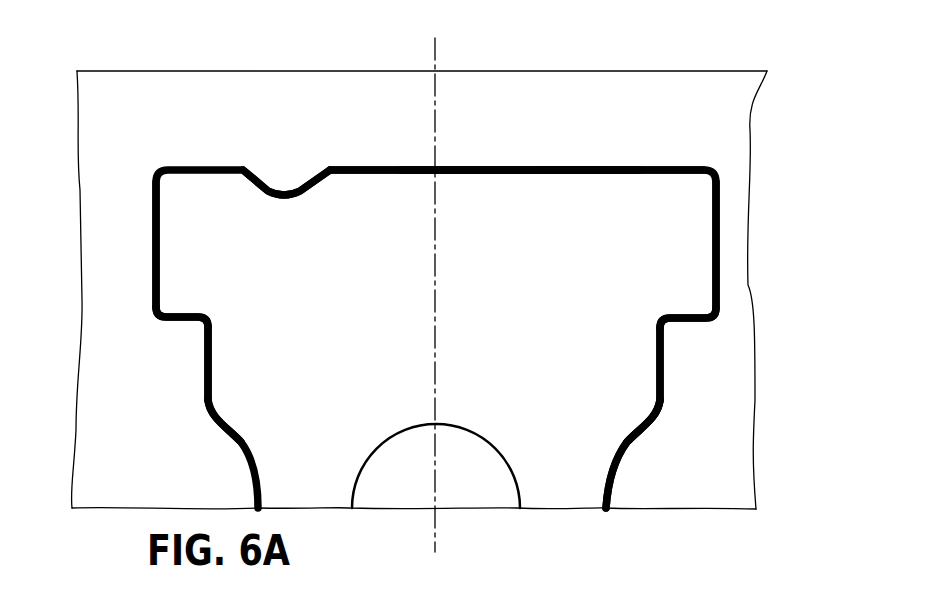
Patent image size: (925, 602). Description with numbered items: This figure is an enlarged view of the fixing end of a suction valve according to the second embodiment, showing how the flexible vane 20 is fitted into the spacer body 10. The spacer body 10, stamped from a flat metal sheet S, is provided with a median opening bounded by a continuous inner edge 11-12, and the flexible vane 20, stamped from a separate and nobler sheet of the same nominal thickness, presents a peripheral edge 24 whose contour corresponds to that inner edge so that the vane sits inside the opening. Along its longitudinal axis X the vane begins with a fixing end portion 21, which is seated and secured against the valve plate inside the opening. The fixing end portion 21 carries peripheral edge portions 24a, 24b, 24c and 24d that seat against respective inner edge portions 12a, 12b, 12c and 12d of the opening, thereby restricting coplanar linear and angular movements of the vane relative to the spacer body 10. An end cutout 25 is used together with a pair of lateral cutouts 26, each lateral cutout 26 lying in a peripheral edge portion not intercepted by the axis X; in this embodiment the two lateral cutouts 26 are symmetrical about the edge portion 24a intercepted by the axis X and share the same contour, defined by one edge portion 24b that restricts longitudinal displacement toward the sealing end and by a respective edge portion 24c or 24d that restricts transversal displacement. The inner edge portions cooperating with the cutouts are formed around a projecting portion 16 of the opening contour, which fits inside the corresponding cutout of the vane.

The sheet S is at (160, 65).
The spacer body 10 is at (107, 117).
The flexible vane 20 is at (693, 165).
The fixing end portion 21 is at (412, 198).
The peripheral edge 24 is at (620, 467).
The peripheral edge portion 24a is at (490, 167).
The peripheral edge portion 24b is at (172, 320).
The peripheral edge portion 24c is at (152, 261).
The peripheral edge portion 24d is at (718, 223).
The end cutout 25 is at (275, 189).
The lateral cutout 26 is at (195, 333).
The projecting portion 16 is at (305, 180).
The inner edge portion 12a is at (569, 174).
The inner edge portion 12b is at (178, 311).
The inner edge portion 12c is at (157, 216).
The inner edge portion 12d is at (712, 238).
The median opening and inner edge 11-12 is at (267, 470).
The longitudinal axis X is at (433, 452).